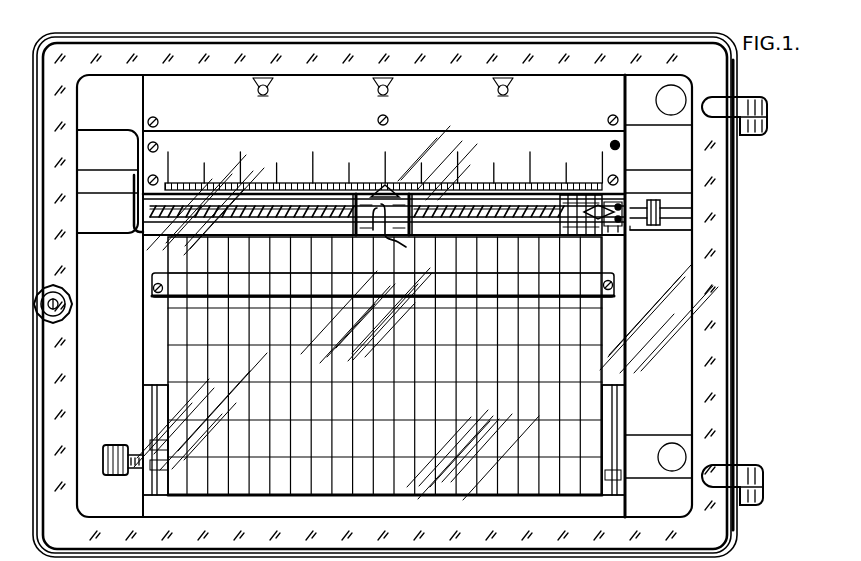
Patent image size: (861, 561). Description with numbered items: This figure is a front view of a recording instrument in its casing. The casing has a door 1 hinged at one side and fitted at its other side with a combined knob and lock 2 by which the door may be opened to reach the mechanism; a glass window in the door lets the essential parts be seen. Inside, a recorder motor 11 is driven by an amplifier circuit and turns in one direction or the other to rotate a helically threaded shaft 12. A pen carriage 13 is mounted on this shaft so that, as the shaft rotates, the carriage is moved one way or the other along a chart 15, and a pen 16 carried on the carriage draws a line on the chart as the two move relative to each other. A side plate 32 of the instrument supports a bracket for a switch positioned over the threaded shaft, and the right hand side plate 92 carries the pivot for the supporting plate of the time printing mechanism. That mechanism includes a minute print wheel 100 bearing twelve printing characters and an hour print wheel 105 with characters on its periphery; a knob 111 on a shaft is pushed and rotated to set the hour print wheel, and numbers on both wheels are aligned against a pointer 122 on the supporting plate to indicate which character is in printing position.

The door 1 is at (724, 434).
The combined knob and lock 2 is at (36, 299).
The recorder motor 11 is at (667, 178).
The helically threaded shaft 12 is at (470, 206).
The pen carriage 13 is at (349, 195).
The chart 15 is at (192, 369).
The pen 16 is at (398, 240).
The side plate 32 is at (150, 415).
The right hand side plate 92 is at (622, 423).
The minute print wheel 100 is at (578, 196).
The hour print wheel 105 is at (560, 195).
The knob 111 is at (650, 226).
The pointer 122 is at (612, 226).